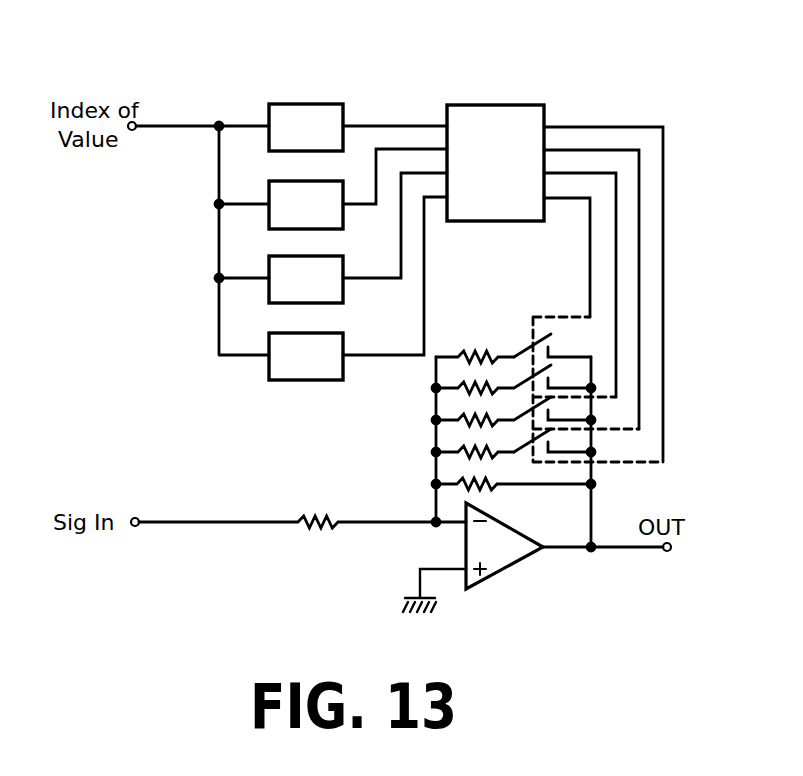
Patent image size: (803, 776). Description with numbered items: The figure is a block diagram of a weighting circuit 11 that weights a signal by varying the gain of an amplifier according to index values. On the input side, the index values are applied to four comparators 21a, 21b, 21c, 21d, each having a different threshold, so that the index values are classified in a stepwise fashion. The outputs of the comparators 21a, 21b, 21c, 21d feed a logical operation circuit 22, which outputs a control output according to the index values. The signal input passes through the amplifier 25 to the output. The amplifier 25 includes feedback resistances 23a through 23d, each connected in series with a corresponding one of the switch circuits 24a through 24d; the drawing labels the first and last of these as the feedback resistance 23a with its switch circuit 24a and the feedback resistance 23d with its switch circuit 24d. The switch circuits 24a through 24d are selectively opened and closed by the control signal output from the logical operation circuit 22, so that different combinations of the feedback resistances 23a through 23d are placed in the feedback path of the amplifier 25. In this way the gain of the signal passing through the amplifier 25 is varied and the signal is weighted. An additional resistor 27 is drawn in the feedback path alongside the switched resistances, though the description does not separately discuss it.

The weighting circuit 11 is at (187, 426).
The comparator 21a is at (280, 104).
The comparator 21b is at (283, 181).
The comparator 21c is at (330, 256).
The comparator 21d is at (330, 333).
The logical operation circuit 22 is at (506, 105).
The feedback resistance 23a is at (477, 352).
The feedback resistance 23d is at (457, 450).
The switch circuit 24a is at (522, 346).
The switch circuit 24d is at (522, 455).
The amplifier 25 is at (510, 580).
The feedback resistor 27 is at (494, 488).